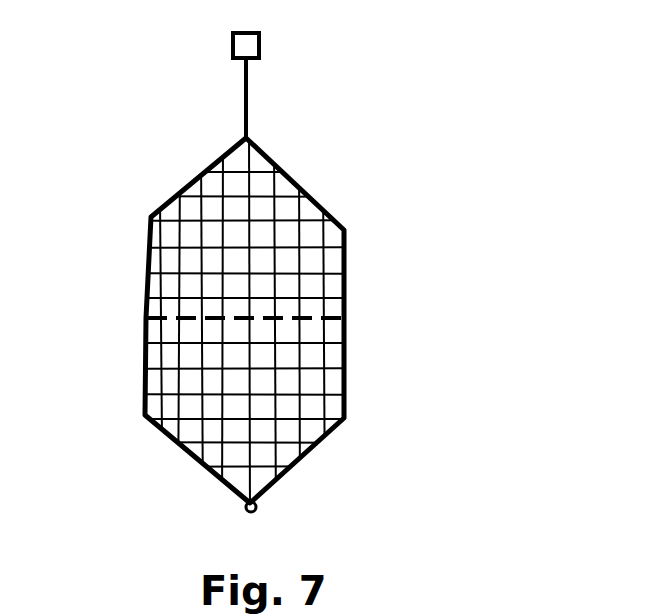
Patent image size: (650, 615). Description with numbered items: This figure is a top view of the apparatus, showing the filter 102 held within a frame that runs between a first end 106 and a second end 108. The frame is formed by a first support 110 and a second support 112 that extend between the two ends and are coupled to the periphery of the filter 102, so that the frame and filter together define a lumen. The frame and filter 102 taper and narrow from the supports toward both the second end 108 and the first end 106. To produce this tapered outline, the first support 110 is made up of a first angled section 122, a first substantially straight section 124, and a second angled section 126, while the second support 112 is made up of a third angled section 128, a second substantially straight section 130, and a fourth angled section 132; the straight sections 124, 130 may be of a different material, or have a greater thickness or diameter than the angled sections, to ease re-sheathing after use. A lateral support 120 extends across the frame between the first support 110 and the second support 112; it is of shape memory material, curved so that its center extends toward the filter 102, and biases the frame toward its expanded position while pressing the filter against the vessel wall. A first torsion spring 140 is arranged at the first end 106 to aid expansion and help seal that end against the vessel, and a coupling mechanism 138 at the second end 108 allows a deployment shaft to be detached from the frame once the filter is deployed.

The filter 102 is at (167, 290).
The first end 106 is at (222, 496).
The second end 108 is at (214, 118).
The first support 110 is at (190, 188).
The second support 112 is at (310, 192).
The lateral support 120 is at (190, 318).
The first angled section 122 is at (199, 166).
The first substantially straight section 124 is at (127, 328).
The second angled section 126 is at (168, 438).
The third angled section 128 is at (296, 165).
The second substantially straight section 130 is at (358, 328).
The fourth angled section 132 is at (335, 450).
The coupling mechanism 138 is at (260, 38).
The first torsion spring 140 is at (258, 507).